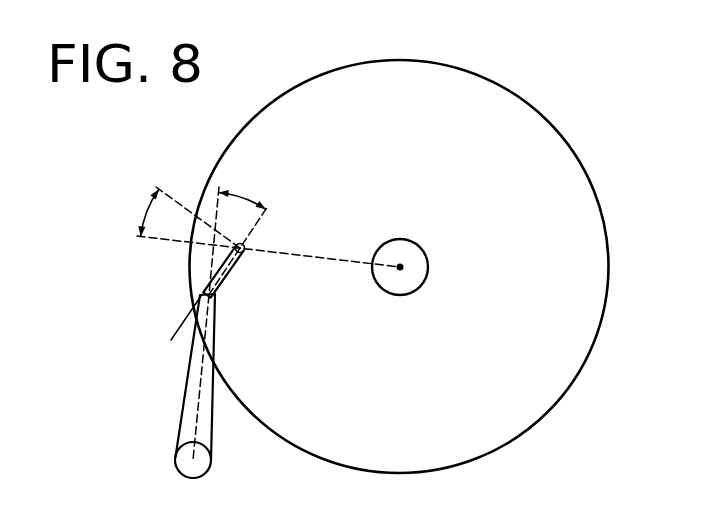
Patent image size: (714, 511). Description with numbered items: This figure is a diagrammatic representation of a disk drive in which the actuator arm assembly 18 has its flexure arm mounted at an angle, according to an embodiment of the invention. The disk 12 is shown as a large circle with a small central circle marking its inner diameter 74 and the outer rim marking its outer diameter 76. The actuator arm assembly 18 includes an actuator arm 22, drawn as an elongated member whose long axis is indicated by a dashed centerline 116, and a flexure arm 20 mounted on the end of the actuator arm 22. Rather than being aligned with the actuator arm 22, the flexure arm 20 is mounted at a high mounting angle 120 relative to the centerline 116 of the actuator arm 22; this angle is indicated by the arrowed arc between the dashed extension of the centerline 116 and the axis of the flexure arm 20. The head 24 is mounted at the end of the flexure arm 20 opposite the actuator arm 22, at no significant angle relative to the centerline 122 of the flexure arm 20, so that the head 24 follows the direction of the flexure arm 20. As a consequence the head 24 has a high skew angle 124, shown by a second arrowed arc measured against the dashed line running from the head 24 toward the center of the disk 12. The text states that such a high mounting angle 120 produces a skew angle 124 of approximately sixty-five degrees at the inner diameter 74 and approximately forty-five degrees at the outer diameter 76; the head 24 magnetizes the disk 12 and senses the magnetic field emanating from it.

The disk 12 is at (446, 170).
The actuator arm assembly 18 is at (132, 386).
The flexure arm 20 is at (228, 282).
The actuator arm 22 is at (180, 424).
The head 24 is at (245, 247).
The inner diameter 74 is at (428, 262).
The outer diameter 76 is at (560, 133).
The centerline 116 is at (199, 395).
The mounting angle 120 is at (247, 194).
The centerline 122 is at (182, 333).
The skew angle 124 is at (146, 214).